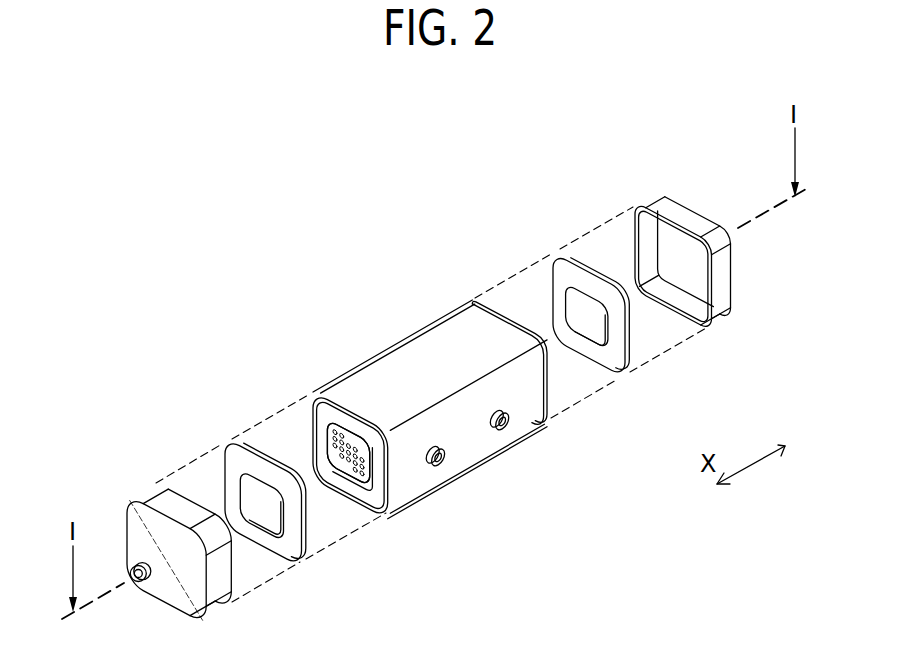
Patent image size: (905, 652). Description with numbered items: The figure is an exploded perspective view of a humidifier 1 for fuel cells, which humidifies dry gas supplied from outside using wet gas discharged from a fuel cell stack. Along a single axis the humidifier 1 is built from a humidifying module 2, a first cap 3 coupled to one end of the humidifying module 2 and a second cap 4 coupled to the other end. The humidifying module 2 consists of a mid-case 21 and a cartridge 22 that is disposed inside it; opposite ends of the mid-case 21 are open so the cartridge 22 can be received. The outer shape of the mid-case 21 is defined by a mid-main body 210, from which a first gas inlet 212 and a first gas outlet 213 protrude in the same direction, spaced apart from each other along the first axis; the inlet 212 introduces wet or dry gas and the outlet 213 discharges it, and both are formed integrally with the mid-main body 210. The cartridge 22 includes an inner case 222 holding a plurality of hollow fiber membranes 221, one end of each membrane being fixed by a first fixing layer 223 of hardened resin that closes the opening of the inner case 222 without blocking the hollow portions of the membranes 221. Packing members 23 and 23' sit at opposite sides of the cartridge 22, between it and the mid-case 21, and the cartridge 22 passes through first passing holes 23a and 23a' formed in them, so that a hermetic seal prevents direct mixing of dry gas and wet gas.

The humidifier for fuel cells 1 is at (91, 131).
The humidifying module 2 is at (378, 242).
The first cap 3 is at (141, 492).
The second cap 4 is at (698, 218).
The mid-case 21 is at (417, 320).
The cartridge 22 is at (352, 418).
The packing member 23 is at (259, 458).
The packing member 23' is at (572, 275).
The first passing hole 23a is at (272, 558).
The first passing hole 23a' is at (601, 369).
The mid-main body 210 is at (528, 402).
The first gas inlet 212 is at (440, 457).
The first gas outlet 213 is at (504, 421).
The hollow fiber membranes 221 is at (338, 474).
The inner case 222 is at (378, 471).
The first fixing layer 223 is at (360, 484).